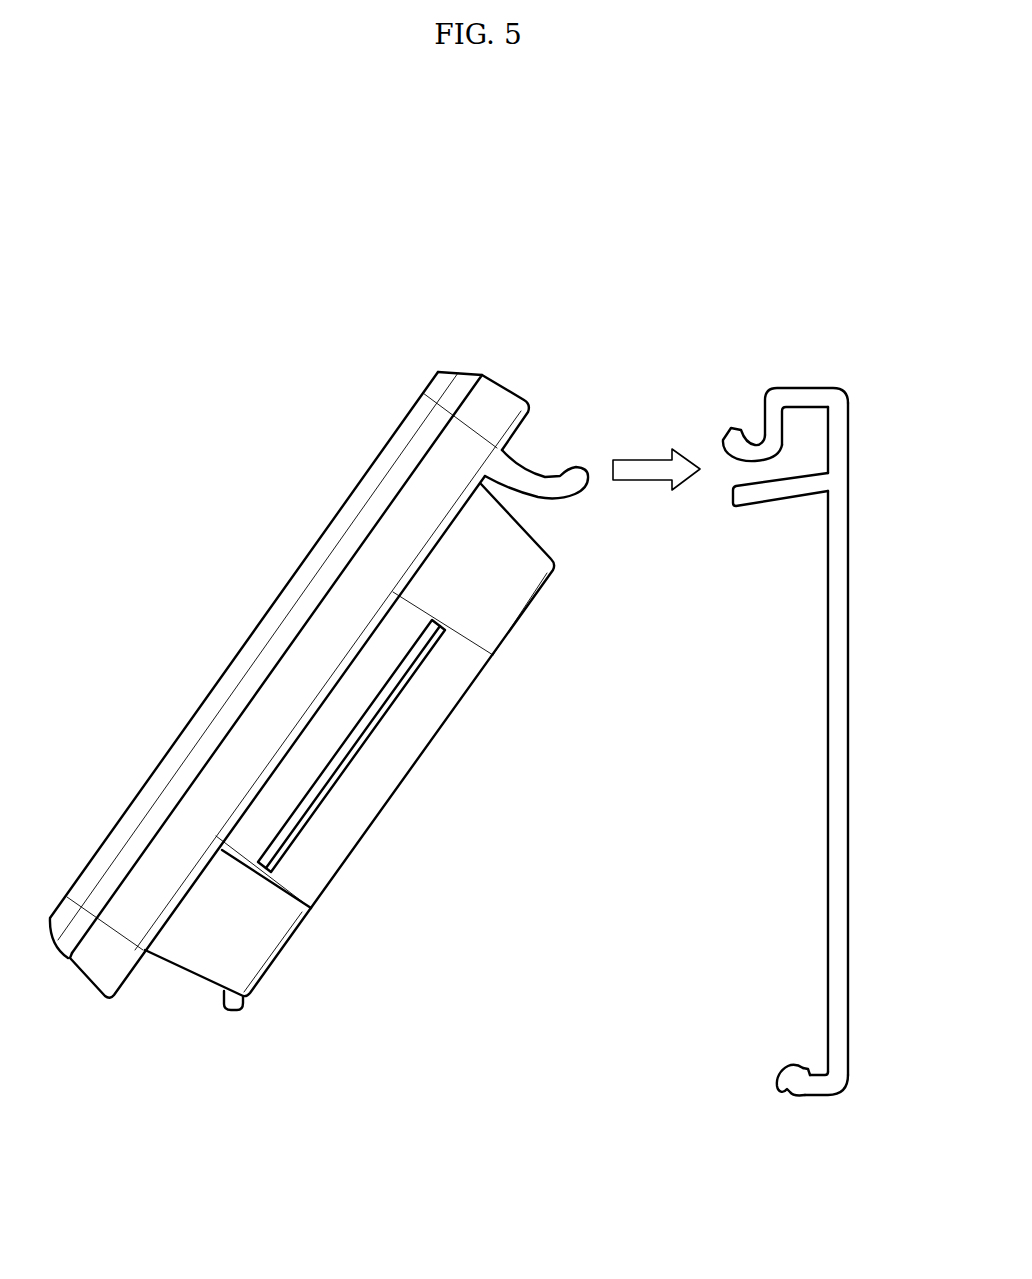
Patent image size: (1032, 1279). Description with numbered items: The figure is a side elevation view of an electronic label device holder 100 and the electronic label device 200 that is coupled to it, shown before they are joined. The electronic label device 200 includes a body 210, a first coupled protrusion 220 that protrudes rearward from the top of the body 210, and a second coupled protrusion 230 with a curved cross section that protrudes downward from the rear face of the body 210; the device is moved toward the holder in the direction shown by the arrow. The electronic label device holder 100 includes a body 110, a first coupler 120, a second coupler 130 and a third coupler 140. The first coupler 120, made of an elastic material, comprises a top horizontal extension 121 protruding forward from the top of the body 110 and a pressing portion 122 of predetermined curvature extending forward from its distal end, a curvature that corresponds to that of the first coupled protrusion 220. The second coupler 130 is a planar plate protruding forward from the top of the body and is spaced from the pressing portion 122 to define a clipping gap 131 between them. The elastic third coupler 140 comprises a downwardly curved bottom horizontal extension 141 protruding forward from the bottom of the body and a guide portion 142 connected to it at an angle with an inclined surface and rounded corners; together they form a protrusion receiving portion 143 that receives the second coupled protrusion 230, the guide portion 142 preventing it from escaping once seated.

The electronic label device holder 100 is at (843, 348).
The body 110 is at (832, 773).
The first coupler 120 is at (697, 322).
The top horizontal extension 121 is at (795, 395).
The pressing portion 122 is at (738, 437).
The second coupler 130 is at (780, 495).
The clipping gap 131 is at (750, 468).
The third coupler 140 is at (752, 1168).
The bottom horizontal extension 141 is at (822, 1097).
The guide portion 142 is at (780, 1097).
The protrusion receiving portion 143 is at (813, 1063).
The electronic label device 200 is at (352, 348).
The body 210 is at (248, 640).
The first coupled protrusion 220 is at (569, 468).
The second coupled protrusion 230 is at (232, 1012).